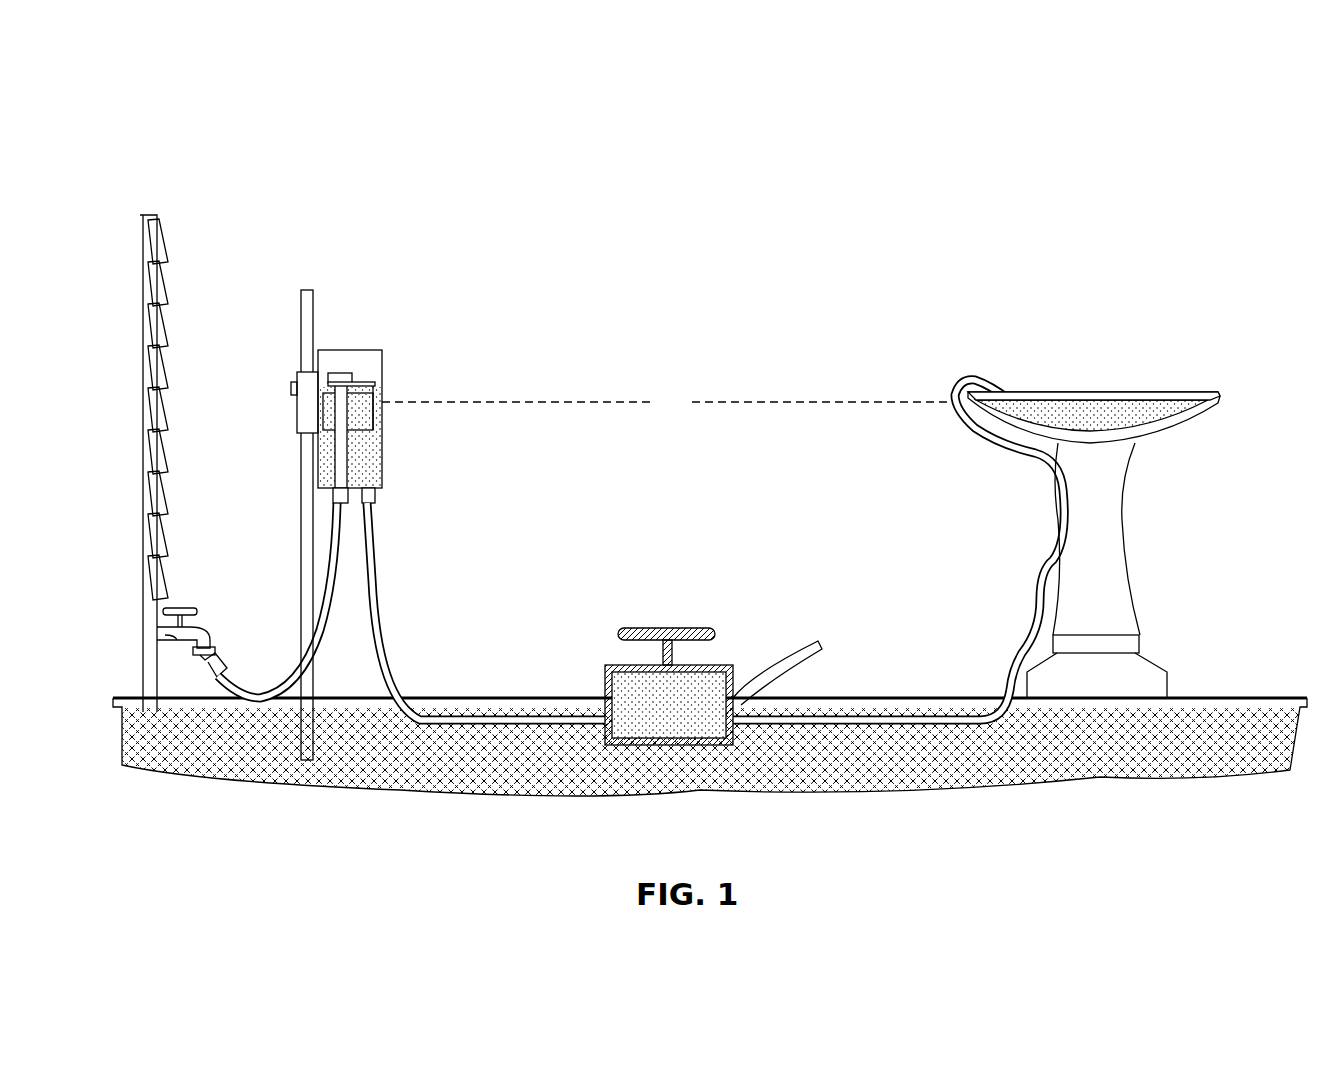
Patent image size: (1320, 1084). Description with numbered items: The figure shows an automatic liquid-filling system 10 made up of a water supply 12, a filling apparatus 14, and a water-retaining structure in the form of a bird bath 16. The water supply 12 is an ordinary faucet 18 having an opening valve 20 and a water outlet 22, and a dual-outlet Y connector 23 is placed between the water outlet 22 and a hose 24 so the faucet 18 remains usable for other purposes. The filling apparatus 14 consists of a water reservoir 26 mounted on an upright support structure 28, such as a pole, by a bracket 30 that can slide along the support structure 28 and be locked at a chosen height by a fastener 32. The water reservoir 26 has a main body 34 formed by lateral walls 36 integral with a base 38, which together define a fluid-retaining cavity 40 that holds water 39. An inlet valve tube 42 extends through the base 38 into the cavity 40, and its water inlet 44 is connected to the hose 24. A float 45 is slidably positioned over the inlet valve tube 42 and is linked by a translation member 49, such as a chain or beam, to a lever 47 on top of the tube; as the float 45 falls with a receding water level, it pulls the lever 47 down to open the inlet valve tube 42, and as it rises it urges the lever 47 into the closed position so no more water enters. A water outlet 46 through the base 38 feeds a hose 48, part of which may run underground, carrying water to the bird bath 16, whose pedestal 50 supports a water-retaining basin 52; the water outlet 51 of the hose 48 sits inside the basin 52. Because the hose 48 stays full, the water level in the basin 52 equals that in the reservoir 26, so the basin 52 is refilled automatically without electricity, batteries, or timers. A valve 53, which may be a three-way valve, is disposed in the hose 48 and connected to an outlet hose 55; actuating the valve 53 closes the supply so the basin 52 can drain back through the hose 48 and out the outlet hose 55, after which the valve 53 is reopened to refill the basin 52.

The automatic liquid-filling system 10 is at (217, 172).
The water supply 12 is at (138, 638).
The filling apparatus 14 is at (376, 346).
The bird bath 16 is at (1134, 498).
The faucet 18 is at (170, 636).
The opening valve 20 is at (178, 605).
The water outlet 22 is at (225, 656).
The dual-outlet Y connector 23 is at (216, 660).
The hose 24 is at (333, 545).
The water reservoir 26 is at (323, 363).
The support structure 28 is at (303, 325).
The bracket 30 is at (305, 420).
The fastener 32 is at (290, 384).
The main body 34 is at (382, 349).
The lateral walls 36 is at (383, 470).
The base 38 is at (380, 495).
The water 39 is at (375, 437).
The fluid-retaining cavity 40 is at (343, 364).
The inlet valve tube 42 is at (320, 477).
The water inlet 44 is at (333, 495).
The float 45 is at (383, 413).
The water outlet 46 is at (378, 500).
The lever 47 is at (354, 378).
The hose 48 is at (373, 605).
The translation member 49 is at (383, 384).
The pedestal 50 is at (1125, 605).
The water outlet 51 is at (1040, 396).
The basin 52 is at (1218, 402).
The valve 53 is at (620, 665).
The outlet hose 55 is at (790, 648).